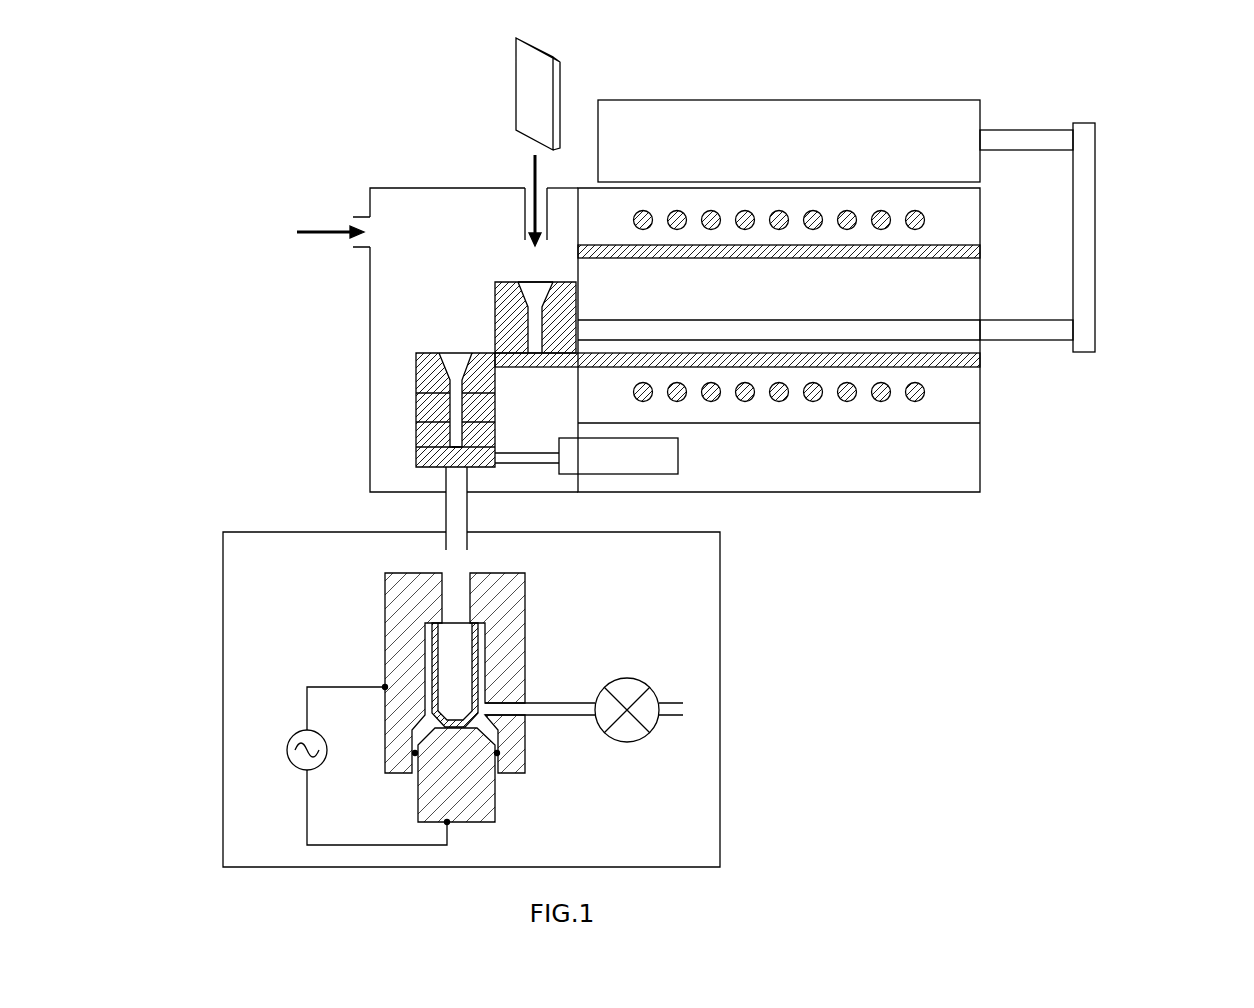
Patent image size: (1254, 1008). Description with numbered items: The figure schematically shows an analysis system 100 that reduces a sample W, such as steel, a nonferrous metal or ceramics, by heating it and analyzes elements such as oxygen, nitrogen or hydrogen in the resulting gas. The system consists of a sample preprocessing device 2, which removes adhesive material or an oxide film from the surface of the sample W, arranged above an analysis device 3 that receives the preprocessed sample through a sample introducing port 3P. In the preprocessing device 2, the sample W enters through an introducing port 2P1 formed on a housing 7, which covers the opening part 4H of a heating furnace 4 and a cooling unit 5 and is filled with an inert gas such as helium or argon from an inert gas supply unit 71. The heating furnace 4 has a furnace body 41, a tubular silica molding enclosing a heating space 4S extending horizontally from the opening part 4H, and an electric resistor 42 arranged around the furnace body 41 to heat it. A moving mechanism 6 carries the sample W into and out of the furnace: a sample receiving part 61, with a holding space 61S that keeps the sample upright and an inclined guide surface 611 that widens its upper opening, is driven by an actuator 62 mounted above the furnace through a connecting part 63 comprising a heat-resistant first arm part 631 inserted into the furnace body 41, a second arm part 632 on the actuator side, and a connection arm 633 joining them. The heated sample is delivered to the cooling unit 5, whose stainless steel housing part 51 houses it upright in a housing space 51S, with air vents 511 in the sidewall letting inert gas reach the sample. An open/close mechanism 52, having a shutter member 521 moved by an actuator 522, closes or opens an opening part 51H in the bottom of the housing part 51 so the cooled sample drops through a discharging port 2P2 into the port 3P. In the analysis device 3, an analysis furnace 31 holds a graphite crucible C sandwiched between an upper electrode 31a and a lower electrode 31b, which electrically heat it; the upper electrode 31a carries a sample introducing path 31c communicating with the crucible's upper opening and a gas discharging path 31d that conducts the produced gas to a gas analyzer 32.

The analysis system 100 is at (330, 107).
The sample W is at (514, 65).
The sample preprocessing device 2 is at (375, 330).
The housing 7 is at (410, 188).
The inert gas supply unit 71 is at (358, 213).
The introducing port 2P1 is at (523, 210).
The discharging port 2P2 is at (445, 482).
The heating furnace 4 is at (737, 248).
The furnace body 41 is at (618, 245).
The electric resistor 42 is at (745, 212).
The heating space 4S is at (780, 300).
The opening part 4H is at (597, 278).
The sample receiving part 61 is at (502, 295).
The inclined guide surface 611 is at (532, 296).
The holding space 61S is at (534, 322).
The moving mechanism 6 is at (916, 190).
The actuator 62 is at (838, 100).
The connecting part 63 is at (1107, 237).
The first arm part 631 is at (1002, 320).
The second arm part 632 is at (1030, 152).
The connection arm 633 is at (1097, 246).
The cooling unit 5 is at (512, 421).
The housing part 51 is at (389, 393).
The housing space 51S is at (452, 385).
The air vent 511 is at (425, 428).
The opening part 51H is at (437, 443).
The open/close mechanism 52 is at (614, 480).
The shutter member 521 is at (473, 470).
The actuator 522 is at (678, 456).
The analysis device 3 is at (444, 679).
The sample introducing port 3P is at (445, 540).
The analysis furnace 31 is at (480, 708).
The upper electrode 31a is at (385, 646).
The lower electrode 31b is at (416, 797).
The sample introducing path 31c is at (488, 598).
The gas discharging path 31d is at (507, 718).
The graphite crucible C is at (480, 655).
The gas analyzer 32 is at (626, 744).